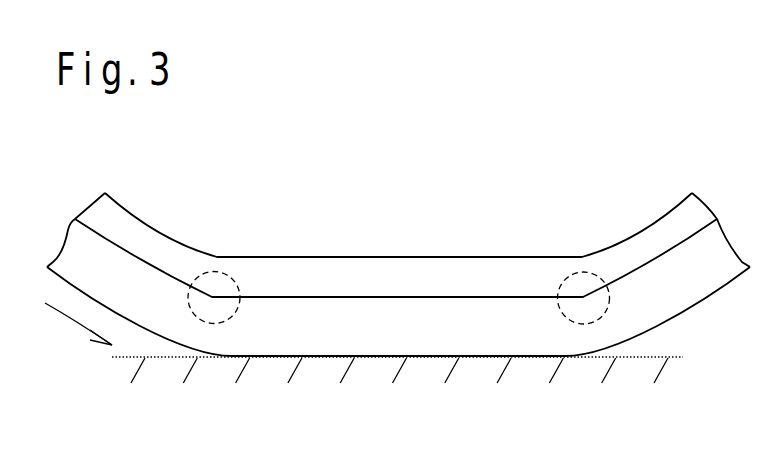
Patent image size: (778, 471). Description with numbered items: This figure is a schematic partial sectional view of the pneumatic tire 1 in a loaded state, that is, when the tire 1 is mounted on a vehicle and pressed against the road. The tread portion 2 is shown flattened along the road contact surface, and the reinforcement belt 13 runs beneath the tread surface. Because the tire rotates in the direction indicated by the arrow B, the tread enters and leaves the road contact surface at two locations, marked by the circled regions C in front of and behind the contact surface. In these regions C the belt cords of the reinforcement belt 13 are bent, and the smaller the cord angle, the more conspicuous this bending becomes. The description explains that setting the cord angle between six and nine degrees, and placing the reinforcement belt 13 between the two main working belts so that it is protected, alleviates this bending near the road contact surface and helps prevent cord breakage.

The tire 1 is at (710, 305).
The reinforcement belt 13 is at (127, 251).
The tread portion 2 is at (397, 402).
The regions of bending C is at (232, 322).
The rotational direction of the tire B is at (78, 328).